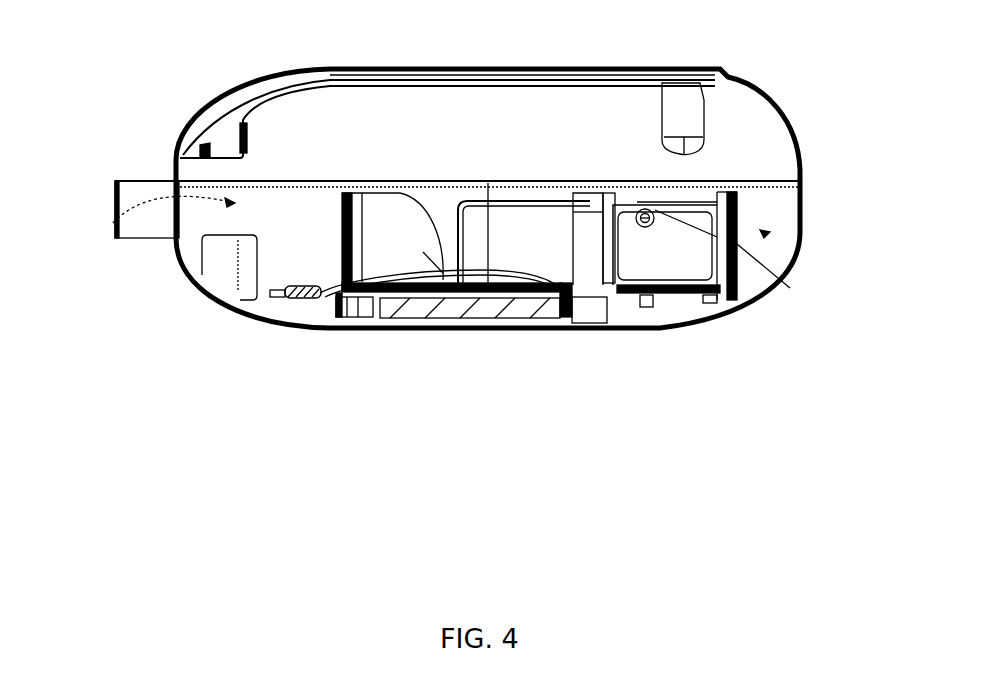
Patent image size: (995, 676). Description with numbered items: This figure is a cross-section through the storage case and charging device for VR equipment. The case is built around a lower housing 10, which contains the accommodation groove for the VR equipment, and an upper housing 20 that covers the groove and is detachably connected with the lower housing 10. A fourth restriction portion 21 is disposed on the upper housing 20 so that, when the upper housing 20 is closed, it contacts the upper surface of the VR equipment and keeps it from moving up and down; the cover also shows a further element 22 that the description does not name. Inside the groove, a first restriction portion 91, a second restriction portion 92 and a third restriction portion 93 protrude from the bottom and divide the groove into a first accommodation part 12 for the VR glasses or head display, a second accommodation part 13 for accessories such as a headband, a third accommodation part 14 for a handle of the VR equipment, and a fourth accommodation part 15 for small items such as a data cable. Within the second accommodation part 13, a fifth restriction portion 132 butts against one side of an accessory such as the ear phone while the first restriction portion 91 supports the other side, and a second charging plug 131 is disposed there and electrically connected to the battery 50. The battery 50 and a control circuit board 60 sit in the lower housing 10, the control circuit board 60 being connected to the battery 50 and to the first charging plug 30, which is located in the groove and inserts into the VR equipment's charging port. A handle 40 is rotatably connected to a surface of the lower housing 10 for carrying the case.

The lower housing 10 is at (805, 188).
The first accommodation part 12 is at (723, 305).
The second accommodation part 13 is at (115, 212).
The second charging plug 131 is at (290, 293).
The fifth restriction portion 132 is at (230, 257).
The third accommodation part 14 is at (457, 283).
The fourth accommodation part 15 is at (760, 230).
The upper housing 20 is at (793, 127).
The fourth restriction portion 21 is at (677, 110).
The cover plate 22 is at (270, 80).
The first charging plug 30 is at (650, 212).
The handle 40 is at (115, 181).
The battery 50 is at (385, 305).
The control circuit board 60 is at (653, 297).
The first restriction portion 91 is at (342, 277).
The second restriction portion 92 is at (565, 292).
The third restriction portion 93 is at (790, 288).